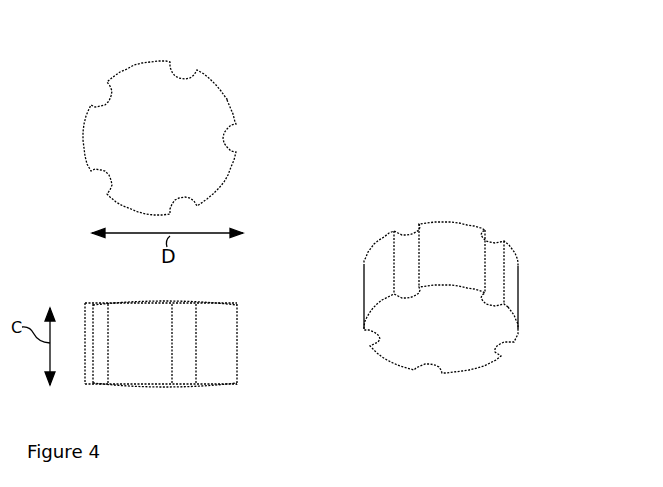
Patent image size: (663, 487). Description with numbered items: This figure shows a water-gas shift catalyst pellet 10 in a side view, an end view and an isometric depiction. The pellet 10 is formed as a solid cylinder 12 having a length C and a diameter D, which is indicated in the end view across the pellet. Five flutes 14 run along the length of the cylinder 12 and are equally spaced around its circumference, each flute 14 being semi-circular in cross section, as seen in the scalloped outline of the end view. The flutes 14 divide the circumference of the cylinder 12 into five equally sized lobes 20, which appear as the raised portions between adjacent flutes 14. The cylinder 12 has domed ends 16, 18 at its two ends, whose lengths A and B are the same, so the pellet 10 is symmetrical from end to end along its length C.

The water-gas shift catalyst pellet 10 is at (296, 104).
The solid cylinder 12 is at (237, 333).
The flute 14 is at (493, 252).
The domed end 16 is at (203, 303).
The domed end 18 is at (203, 387).
The lobe 20 is at (515, 287).